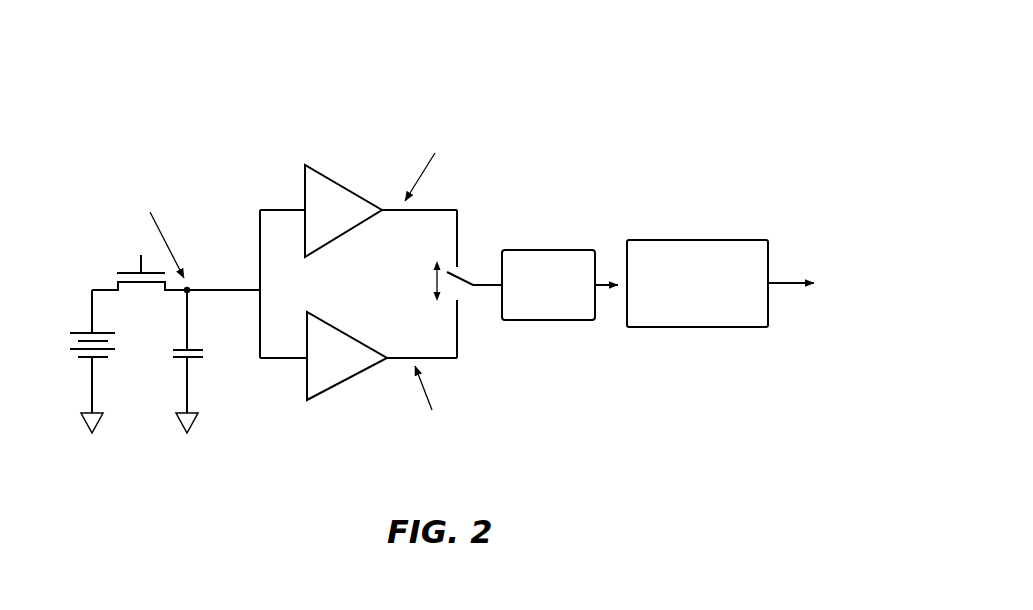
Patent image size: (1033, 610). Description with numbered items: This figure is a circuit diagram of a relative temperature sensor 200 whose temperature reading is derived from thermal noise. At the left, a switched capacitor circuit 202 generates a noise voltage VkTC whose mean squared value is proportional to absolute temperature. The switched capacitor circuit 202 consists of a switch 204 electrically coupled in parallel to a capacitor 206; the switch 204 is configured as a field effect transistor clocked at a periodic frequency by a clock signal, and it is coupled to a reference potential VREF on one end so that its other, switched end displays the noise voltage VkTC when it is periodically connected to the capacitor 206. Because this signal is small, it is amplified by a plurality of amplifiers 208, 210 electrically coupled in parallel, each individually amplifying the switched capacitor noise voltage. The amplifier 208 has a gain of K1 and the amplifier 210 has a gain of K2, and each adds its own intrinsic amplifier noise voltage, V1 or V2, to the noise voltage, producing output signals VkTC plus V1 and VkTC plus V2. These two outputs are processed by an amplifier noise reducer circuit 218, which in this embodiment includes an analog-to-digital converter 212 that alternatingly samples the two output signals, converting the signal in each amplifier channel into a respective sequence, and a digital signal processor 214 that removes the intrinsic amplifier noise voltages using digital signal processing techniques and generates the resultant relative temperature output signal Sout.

The relative temperature sensor 200 is at (610, 109).
The switched capacitor circuit 202 is at (196, 238).
The switch 204 is at (119, 279).
The capacitor 206 is at (201, 358).
The amplifier 208 is at (322, 172).
The amplifier 210 is at (336, 387).
The analog-to-digital converter 212 is at (568, 249).
The digital signal processor 214 is at (673, 240).
The amplifier noise reducer circuit 218 is at (740, 356).